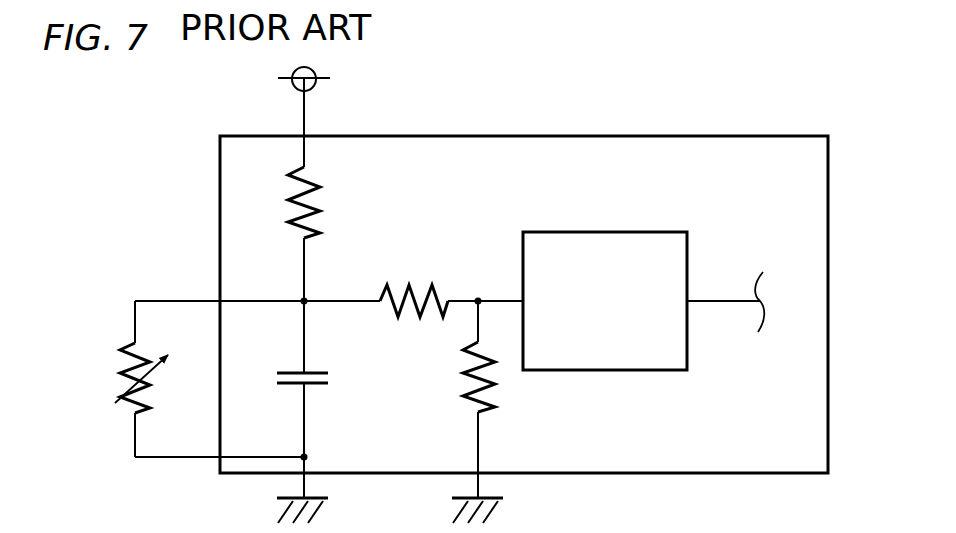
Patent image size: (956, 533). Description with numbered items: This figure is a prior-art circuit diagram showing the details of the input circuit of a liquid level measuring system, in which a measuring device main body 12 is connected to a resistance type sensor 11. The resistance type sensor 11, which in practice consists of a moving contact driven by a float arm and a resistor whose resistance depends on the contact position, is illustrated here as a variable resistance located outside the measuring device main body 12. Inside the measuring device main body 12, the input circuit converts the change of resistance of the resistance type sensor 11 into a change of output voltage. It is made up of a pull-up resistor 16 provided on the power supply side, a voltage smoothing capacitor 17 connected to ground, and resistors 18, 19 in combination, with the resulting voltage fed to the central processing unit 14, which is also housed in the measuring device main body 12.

The resistance type sensor 11 is at (120, 375).
The measuring device main body 12 is at (575, 134).
The central processing unit 14 is at (612, 231).
The pull-up resistor 16 is at (330, 210).
The voltage smoothing capacitor 17 is at (328, 384).
The resistor 18 is at (432, 286).
The resistor 19 is at (500, 383).